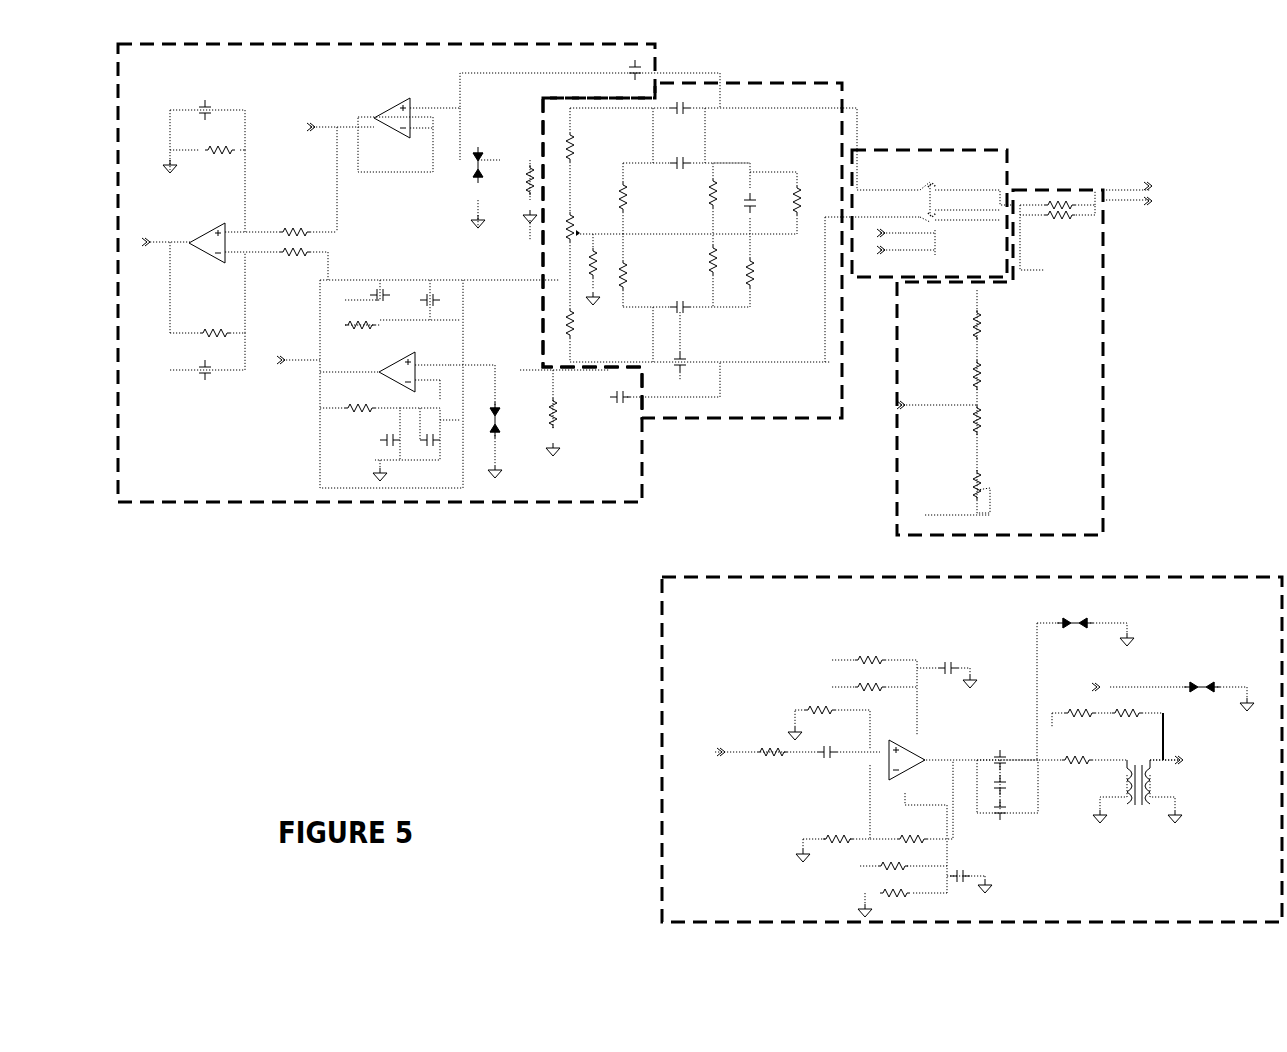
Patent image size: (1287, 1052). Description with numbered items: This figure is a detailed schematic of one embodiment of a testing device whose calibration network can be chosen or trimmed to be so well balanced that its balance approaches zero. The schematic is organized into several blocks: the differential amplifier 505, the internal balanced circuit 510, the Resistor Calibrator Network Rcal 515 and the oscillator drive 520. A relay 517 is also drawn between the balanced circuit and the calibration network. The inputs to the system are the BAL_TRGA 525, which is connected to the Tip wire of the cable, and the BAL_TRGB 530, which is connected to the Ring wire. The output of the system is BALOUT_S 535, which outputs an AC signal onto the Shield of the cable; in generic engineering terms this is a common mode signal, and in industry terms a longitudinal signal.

The differential amplifier 505 is at (207, 502).
The internal balanced circuit 510 is at (772, 527).
The Rcal 515 is at (1103, 465).
The relay 517 is at (912, 150).
The oscillator drive 520 is at (566, 665).
The BAL_TRGA 525 is at (1130, 177).
The BAL_TRGB 530 is at (1130, 198).
The BALOUT_S 535 is at (1180, 760).